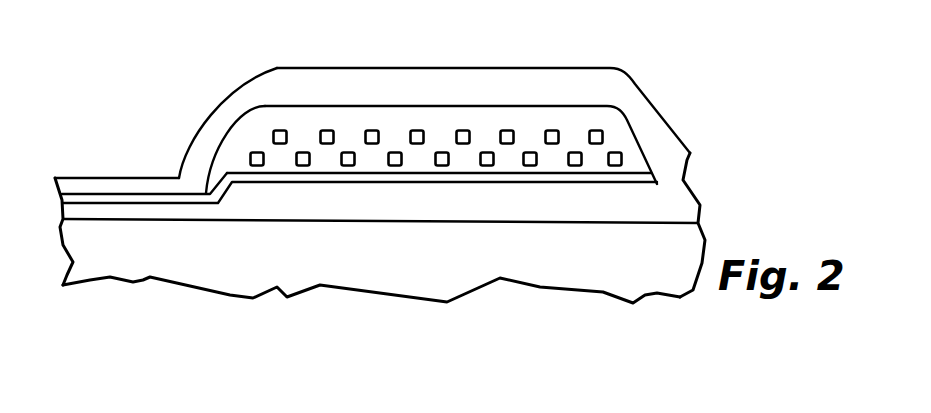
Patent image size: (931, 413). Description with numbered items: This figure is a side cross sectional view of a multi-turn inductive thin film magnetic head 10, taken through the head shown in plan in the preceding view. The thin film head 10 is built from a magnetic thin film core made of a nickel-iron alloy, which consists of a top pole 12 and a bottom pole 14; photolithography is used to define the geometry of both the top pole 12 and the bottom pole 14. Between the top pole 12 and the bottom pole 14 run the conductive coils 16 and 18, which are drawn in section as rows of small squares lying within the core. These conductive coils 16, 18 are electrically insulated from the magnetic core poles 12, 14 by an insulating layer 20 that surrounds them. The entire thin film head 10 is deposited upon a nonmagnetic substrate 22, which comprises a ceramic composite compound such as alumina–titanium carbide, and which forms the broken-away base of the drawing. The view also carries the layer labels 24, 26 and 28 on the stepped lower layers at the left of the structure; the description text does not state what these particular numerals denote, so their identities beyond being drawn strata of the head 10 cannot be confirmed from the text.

The thin film magnetic head 10 is at (617, 46).
The top pole 12 is at (413, 83).
The bottom pole 14 is at (593, 207).
The conductive coil 16 is at (551, 130).
The conductive coil 18 is at (350, 152).
The insulating layer 20 is at (623, 140).
The nonmagnetic substrate 22 is at (368, 267).
The electrode layer 24 is at (163, 185).
The intermediate layer 26 is at (105, 207).
The thin conductive layer 28 is at (82, 197).